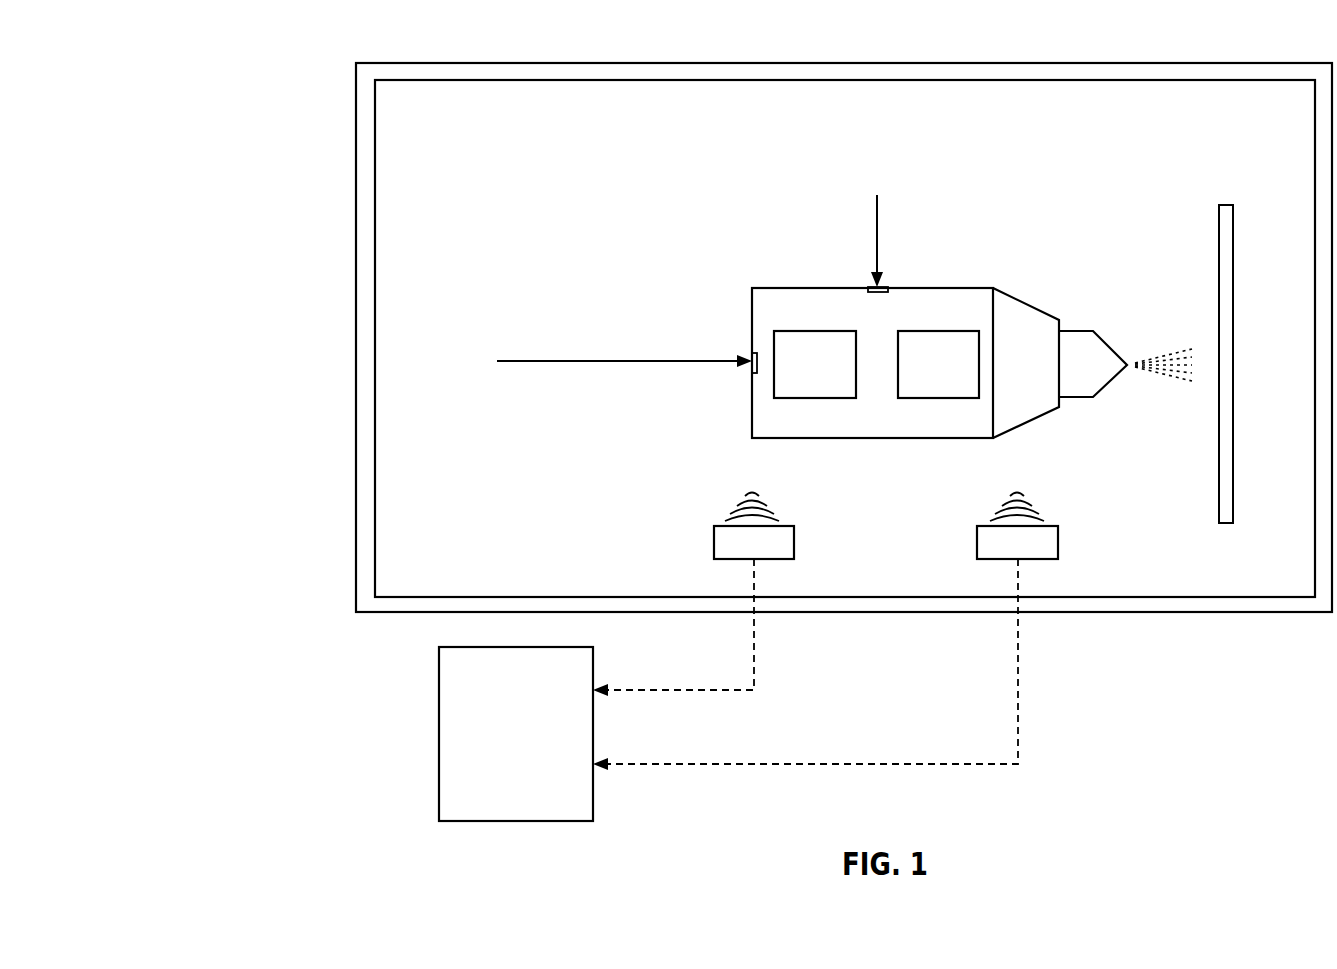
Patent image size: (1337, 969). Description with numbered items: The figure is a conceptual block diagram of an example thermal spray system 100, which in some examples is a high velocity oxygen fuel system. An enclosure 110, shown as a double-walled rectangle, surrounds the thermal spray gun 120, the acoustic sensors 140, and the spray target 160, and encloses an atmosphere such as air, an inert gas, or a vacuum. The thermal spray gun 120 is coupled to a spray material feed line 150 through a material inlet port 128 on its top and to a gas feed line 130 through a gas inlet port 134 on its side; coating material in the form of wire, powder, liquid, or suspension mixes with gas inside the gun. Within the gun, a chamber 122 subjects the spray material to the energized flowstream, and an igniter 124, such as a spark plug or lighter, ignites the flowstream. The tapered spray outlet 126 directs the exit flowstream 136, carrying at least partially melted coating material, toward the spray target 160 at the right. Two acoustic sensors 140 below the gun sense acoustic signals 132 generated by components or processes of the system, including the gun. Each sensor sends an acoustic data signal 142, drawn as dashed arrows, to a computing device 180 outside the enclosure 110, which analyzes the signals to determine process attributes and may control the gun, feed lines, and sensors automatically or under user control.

The thermal spray system 100 is at (311, 62).
The enclosure 110 is at (1010, 64).
The thermal spray gun 120 is at (1000, 288).
The chamber 122 is at (797, 374).
The igniter 124 is at (920, 374).
The spray outlet 126 is at (1127, 357).
The material inlet port 128 is at (873, 287).
The gas feed line 130 is at (598, 361).
The acoustic signals 132 is at (972, 501).
The gas inlet port 134 is at (752, 355).
The exit flowstream 136 is at (1170, 336).
The acoustic sensor 140 is at (977, 535).
The acoustic data signal 142 is at (819, 764).
The material feed line 150 is at (878, 232).
The spray target 160 is at (1233, 503).
The computing device 180 is at (498, 744).